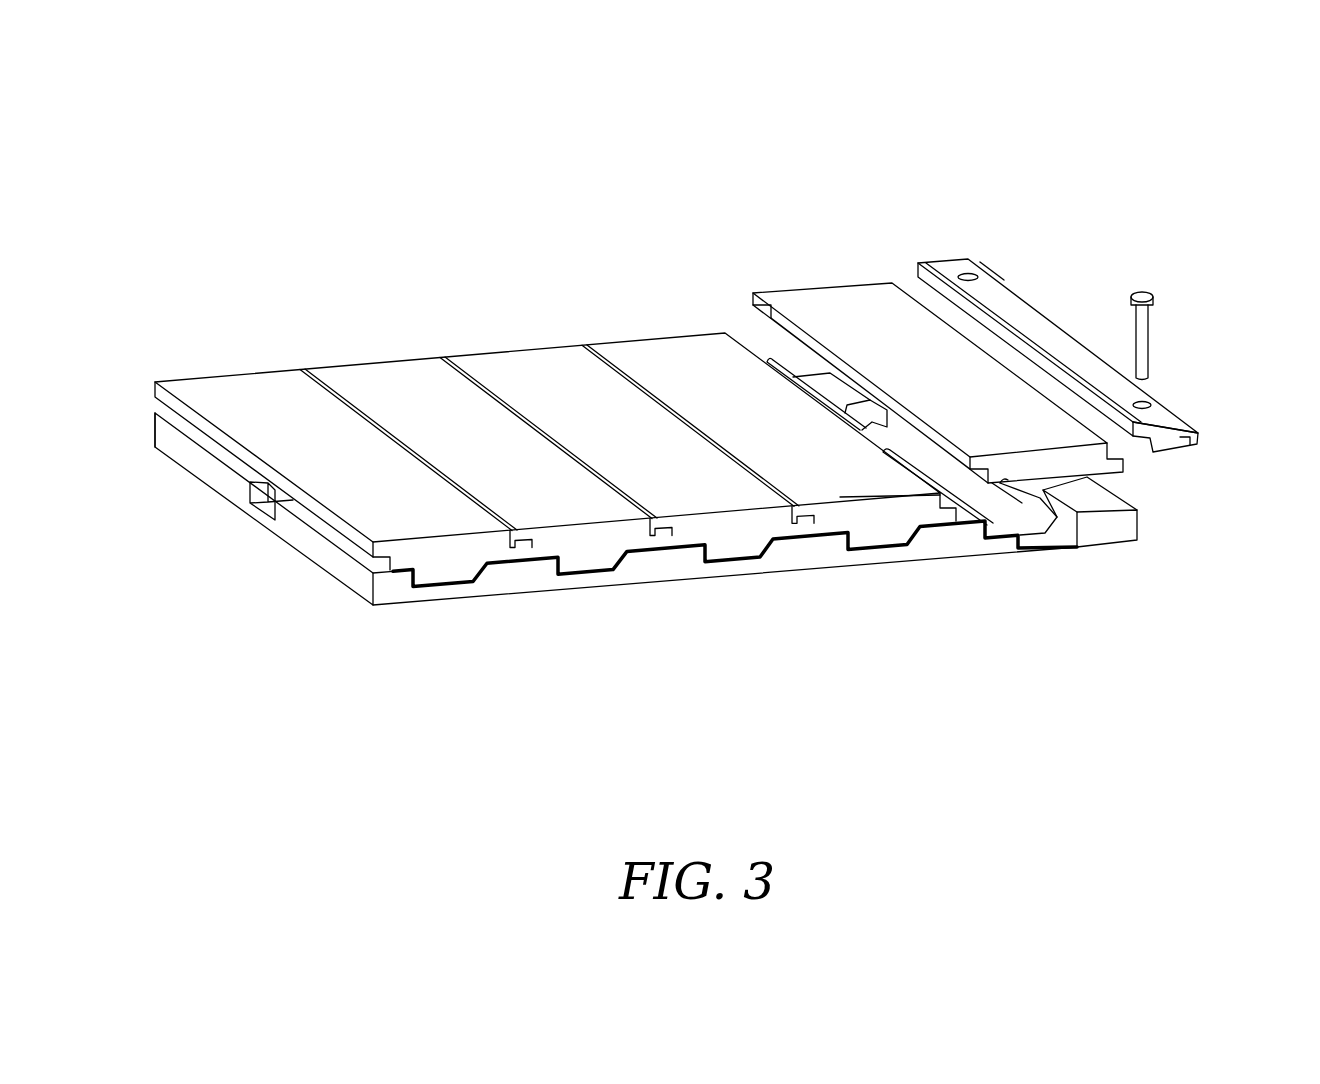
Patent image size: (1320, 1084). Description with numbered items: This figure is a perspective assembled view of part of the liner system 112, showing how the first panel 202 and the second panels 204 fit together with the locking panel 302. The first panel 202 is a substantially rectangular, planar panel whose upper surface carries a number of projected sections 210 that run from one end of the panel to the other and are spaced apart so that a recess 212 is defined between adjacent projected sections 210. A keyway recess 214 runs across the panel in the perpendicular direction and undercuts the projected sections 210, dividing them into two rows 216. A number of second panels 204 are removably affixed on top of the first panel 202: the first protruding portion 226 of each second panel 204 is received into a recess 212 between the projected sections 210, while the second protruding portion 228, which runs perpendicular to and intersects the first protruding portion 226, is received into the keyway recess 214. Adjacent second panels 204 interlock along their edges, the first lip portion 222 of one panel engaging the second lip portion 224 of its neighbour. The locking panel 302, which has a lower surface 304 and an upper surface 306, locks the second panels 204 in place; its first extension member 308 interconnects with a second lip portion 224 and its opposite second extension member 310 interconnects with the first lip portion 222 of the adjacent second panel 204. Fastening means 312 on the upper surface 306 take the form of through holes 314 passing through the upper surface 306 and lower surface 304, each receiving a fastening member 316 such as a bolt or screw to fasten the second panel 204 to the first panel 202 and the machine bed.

The liner system 112 is at (378, 283).
The first panel 202 is at (660, 597).
The second panel 204 is at (634, 315).
The projected sections 210 is at (950, 540).
The recess 212 is at (1020, 522).
The keyway recess 214 is at (250, 512).
The rows 216 is at (310, 583).
The first lip portion 222 is at (753, 297).
The second lip portion 224 is at (1062, 492).
The first protruding portion 226 is at (1060, 488).
The second protruding portion 228 is at (877, 407).
The locking panel 302 is at (1050, 308).
The lower surface 304 is at (1182, 458).
The upper surface 306 is at (940, 262).
The first extension member 308 is at (917, 273).
The second extension member 310 is at (1202, 434).
The fastening means 312 is at (967, 268).
The through holes 314 is at (970, 268).
The fastening member 316 is at (1146, 336).